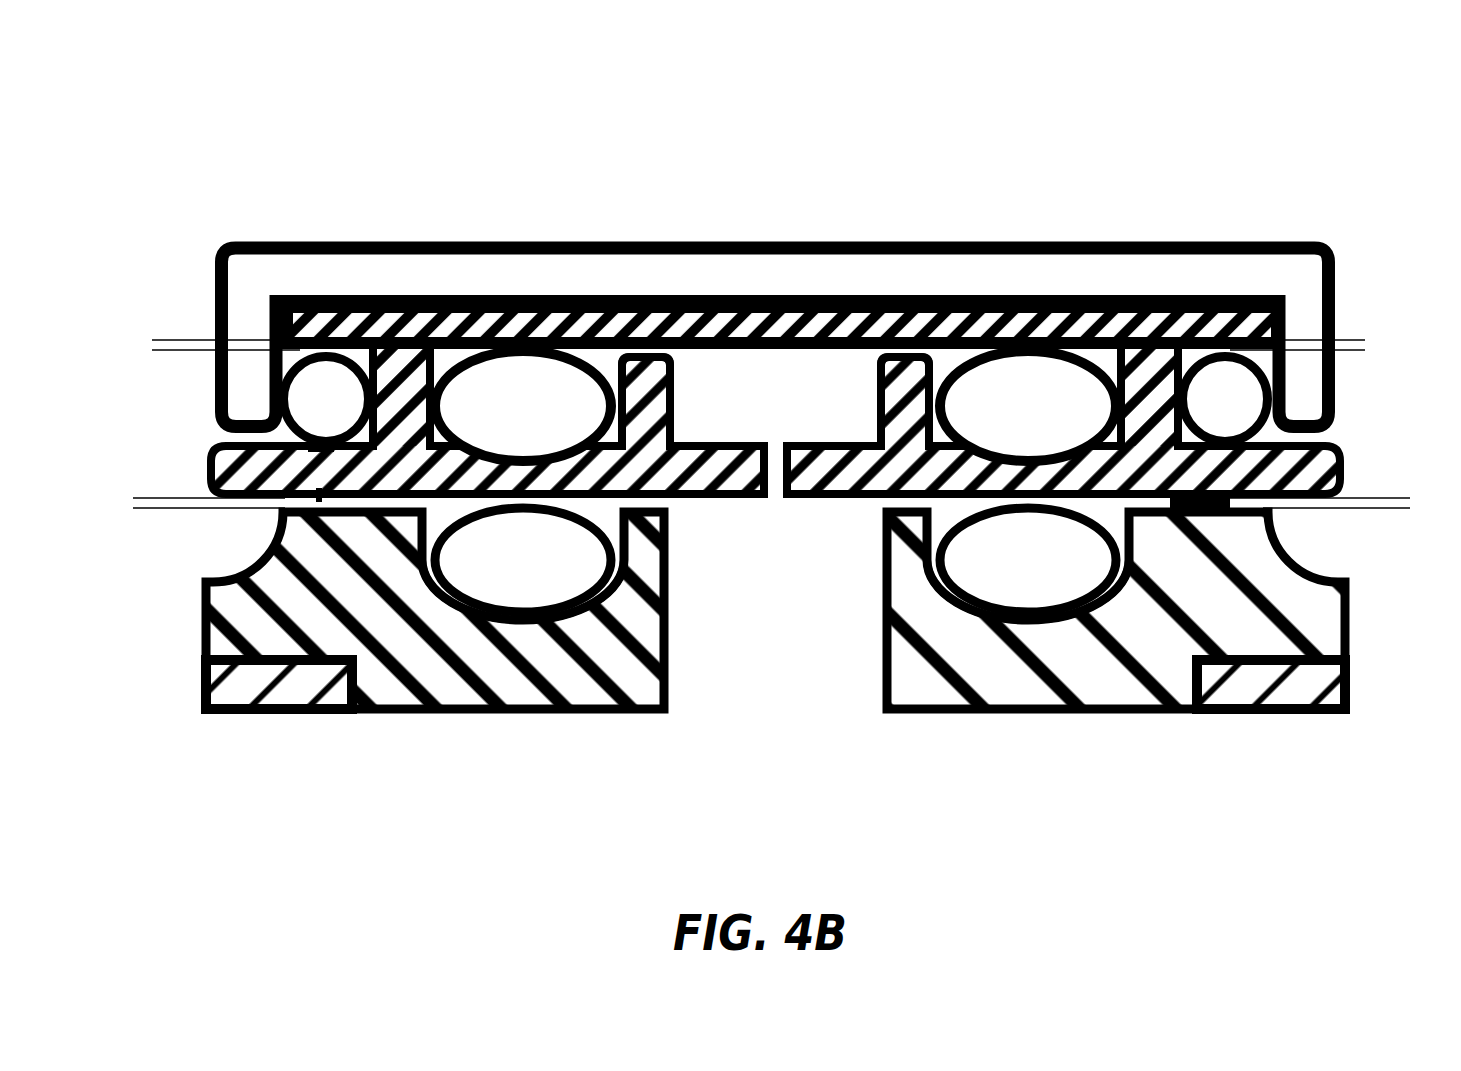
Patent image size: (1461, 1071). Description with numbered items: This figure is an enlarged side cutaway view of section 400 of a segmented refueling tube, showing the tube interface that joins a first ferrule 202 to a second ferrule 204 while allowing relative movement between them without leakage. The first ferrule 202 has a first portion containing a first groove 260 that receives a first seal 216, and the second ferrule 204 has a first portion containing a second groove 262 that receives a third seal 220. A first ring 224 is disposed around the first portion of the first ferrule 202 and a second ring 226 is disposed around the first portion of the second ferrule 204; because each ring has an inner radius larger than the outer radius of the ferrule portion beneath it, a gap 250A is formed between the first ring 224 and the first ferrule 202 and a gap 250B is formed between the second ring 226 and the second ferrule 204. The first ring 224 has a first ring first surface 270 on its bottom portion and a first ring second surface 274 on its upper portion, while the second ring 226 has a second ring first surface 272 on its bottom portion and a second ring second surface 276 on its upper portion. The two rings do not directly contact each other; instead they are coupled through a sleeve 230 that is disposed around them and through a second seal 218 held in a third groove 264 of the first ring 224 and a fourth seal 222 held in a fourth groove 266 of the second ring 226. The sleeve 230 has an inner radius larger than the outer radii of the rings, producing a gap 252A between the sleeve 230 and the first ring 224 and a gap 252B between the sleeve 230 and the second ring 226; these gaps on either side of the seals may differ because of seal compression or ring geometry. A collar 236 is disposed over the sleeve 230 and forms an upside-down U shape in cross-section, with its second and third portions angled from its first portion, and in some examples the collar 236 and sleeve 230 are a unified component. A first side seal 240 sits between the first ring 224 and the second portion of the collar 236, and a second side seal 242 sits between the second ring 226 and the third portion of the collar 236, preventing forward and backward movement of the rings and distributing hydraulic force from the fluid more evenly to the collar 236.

The section 400 is at (240, 122).
The first ferrule 202 is at (610, 716).
The second ferrule 204 is at (1116, 716).
The first seal 216 is at (495, 615).
The third seal 220 is at (1012, 632).
The second seal 218 is at (582, 345).
The fourth seal 222 is at (1084, 332).
The first ring 224 is at (209, 455).
The second ring 226 is at (1344, 453).
The sleeve 230 is at (757, 351).
The collar 236 is at (769, 242).
The first side seal 240 is at (277, 399).
The second side seal 242 is at (1285, 398).
The gap 250A is at (168, 462).
The gap 250B is at (1378, 462).
The gap 252A is at (168, 382).
The gap 252B is at (1348, 393).
The first groove 260 is at (437, 520).
The second groove 262 is at (1115, 524).
The third groove 264 is at (437, 358).
The fourth groove 266 is at (942, 358).
The first ring first surface 270 is at (738, 500).
The second ring first surface 272 is at (807, 500).
The first ring second surface 274 is at (712, 444).
The second ring second surface 276 is at (825, 444).